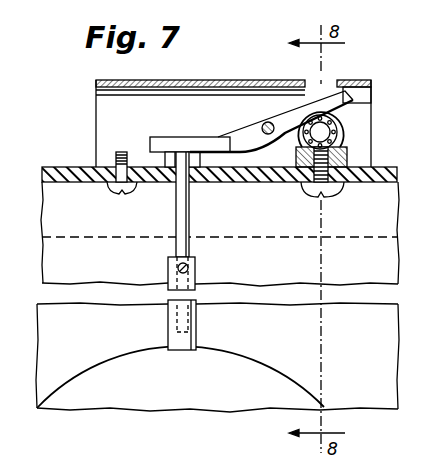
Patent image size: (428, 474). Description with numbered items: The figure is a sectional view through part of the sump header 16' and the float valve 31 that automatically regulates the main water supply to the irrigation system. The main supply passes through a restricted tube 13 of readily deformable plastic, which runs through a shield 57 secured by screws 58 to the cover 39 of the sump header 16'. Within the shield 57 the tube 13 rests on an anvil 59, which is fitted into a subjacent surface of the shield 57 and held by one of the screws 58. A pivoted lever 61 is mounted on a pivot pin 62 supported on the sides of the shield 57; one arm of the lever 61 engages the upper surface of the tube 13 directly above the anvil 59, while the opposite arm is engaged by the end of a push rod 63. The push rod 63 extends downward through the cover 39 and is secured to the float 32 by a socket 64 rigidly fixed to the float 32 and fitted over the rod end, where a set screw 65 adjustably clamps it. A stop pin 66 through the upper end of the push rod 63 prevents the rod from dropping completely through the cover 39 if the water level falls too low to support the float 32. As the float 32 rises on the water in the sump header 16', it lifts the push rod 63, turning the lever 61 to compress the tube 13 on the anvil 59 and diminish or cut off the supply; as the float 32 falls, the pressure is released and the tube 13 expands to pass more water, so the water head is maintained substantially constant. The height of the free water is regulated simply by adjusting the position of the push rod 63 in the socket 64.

The restricted tube 13 is at (342, 116).
The sump header 16' is at (204, 234).
The float valve 31 is at (190, 80).
The float 32 is at (100, 365).
The cover 39 is at (72, 167).
The shield 57 is at (118, 106).
The screws 58 is at (135, 194).
The anvil 59 is at (348, 152).
The pivoted lever 61 is at (286, 118).
The pivot pin 62 is at (272, 134).
The push rod 63 is at (180, 212).
The socket 64 is at (182, 342).
The set screw 65 is at (189, 267).
The stop pin 66 is at (197, 158).